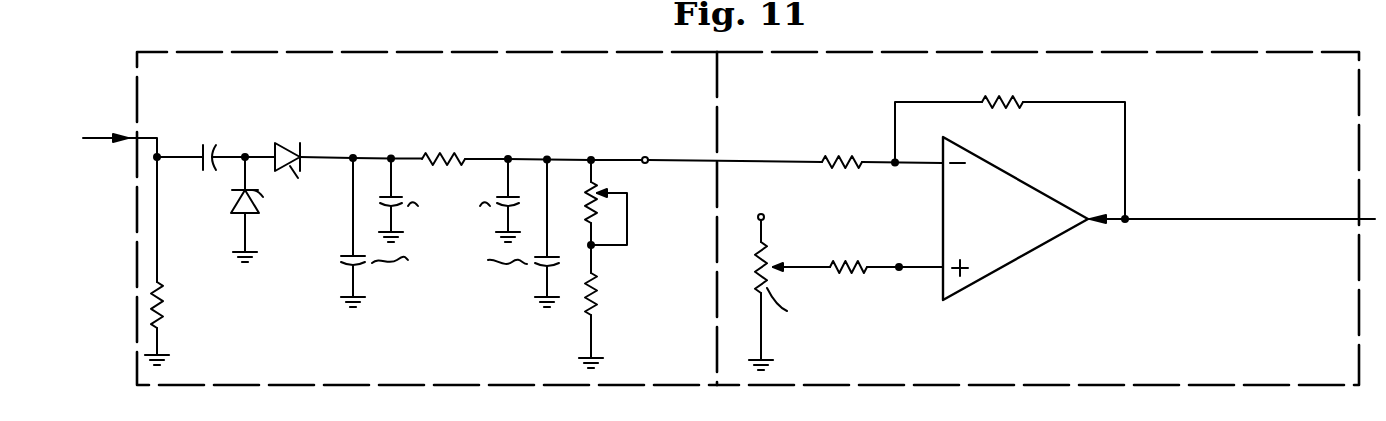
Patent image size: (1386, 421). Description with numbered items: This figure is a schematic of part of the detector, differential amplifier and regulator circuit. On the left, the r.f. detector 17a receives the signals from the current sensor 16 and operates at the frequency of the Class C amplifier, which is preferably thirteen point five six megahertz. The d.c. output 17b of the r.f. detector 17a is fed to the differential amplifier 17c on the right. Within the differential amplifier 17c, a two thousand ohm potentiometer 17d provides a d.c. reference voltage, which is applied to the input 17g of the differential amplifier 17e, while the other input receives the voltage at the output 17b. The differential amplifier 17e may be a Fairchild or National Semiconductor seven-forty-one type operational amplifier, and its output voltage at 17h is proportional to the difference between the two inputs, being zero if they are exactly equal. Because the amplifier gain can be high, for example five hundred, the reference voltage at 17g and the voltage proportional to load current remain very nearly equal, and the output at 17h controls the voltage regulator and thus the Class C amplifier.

The sensor 16 is at (109, 104).
The r.f. detector 17a is at (498, 386).
The d.c. output of the r.f. detector 17b is at (630, 160).
The differential amplifier 17c is at (836, 386).
The potentiometer 17d is at (761, 228).
The differential amplifier 17e is at (1008, 181).
The input for the reference voltage 17g is at (913, 267).
The output voltage 17h is at (1210, 218).